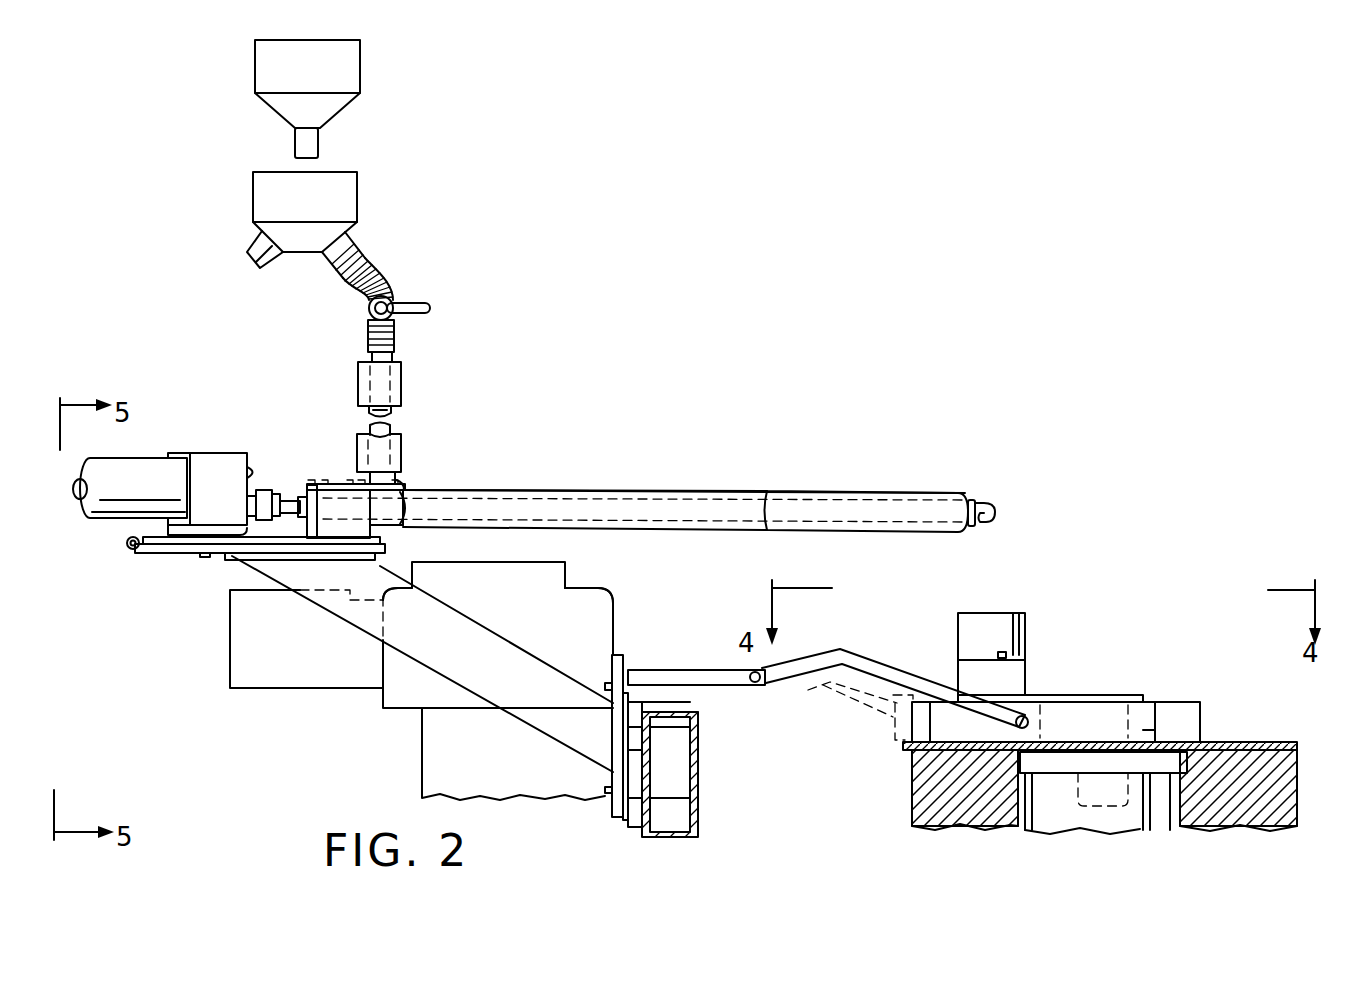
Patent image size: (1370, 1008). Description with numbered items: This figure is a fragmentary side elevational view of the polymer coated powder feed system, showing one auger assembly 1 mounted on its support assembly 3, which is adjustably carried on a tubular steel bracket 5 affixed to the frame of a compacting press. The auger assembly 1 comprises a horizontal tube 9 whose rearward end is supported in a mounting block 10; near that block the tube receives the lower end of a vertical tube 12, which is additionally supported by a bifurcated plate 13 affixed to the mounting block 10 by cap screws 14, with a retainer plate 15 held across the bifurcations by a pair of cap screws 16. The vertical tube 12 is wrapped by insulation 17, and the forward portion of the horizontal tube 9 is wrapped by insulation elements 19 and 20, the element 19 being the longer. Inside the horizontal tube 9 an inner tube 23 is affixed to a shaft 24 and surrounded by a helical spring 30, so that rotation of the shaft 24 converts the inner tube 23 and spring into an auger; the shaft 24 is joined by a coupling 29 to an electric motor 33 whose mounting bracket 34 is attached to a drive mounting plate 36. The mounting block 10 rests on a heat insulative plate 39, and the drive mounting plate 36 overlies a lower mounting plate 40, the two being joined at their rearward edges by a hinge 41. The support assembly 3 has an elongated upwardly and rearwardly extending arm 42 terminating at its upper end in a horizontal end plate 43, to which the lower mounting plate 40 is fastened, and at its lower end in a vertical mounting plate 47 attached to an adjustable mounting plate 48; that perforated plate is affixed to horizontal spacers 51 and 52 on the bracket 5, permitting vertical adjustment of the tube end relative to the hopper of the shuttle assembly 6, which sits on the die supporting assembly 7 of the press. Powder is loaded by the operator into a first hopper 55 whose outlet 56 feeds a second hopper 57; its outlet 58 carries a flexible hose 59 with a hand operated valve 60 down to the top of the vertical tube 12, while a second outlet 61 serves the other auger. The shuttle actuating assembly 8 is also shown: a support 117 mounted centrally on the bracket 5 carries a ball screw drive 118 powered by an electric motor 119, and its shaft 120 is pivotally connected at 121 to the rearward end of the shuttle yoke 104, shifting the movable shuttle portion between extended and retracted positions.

The auger assembly 1 is at (691, 486).
The support assembly 3 is at (528, 735).
The tubular steel bracket 5 is at (700, 724).
The shuttle assembly 6 is at (1094, 685).
The die supporting assembly 7 is at (1260, 742).
The shuttle actuating assembly 8 is at (620, 603).
The horizontal tube 9 is at (405, 512).
The mounting block 10 is at (398, 530).
The vertical tube 12 is at (392, 411).
The plate 13 is at (333, 487).
The cap screws 14 is at (322, 487).
The retainer plate 15 is at (404, 490).
The cap screws 16 is at (402, 482).
The insulation 17 is at (358, 374).
The insulation element 19 is at (582, 495).
The insulation element 20 is at (822, 495).
The inner tube 23 is at (990, 503).
The shaft 24 is at (302, 502).
The coupling 29 is at (275, 487).
The helical spring 30 is at (982, 522).
The electric motor 33 is at (146, 491).
The mounting bracket 34 is at (245, 468).
The drive mounting plate 36 is at (175, 553).
The heat insulative plate 39 is at (395, 552).
The lower mounting plate 40 is at (405, 586).
The hinge 41 is at (125, 544).
The arm 42 is at (475, 662).
The horizontal end plate 43 is at (340, 560).
The vertical mounting plate 47 is at (612, 778).
The adjustable mounting plate 48 is at (622, 820).
The horizontal spacer 51 is at (648, 739).
The horizontal spacer 52 is at (645, 811).
The first hopper 55 is at (345, 62).
The outlet 56 is at (310, 146).
The second hopper 57 is at (343, 190).
The outlet 58 is at (355, 240).
The flexible hose 59 is at (387, 270).
The hand operated valve 60 is at (405, 302).
The second outlet 61 is at (258, 247).
The shuttle yoke 104 is at (862, 665).
The support 117 is at (432, 754).
The ball screw drive 118 is at (578, 624).
The electric motor 119 is at (302, 660).
The shaft 120 is at (720, 670).
The pivotal connection 121 is at (755, 684).